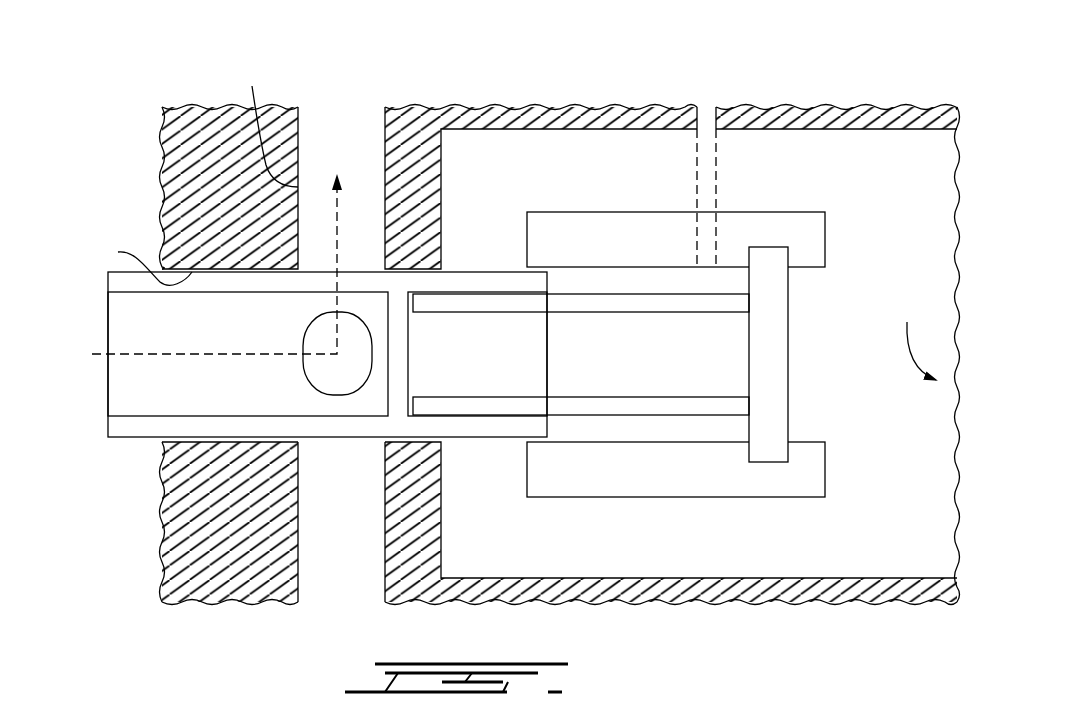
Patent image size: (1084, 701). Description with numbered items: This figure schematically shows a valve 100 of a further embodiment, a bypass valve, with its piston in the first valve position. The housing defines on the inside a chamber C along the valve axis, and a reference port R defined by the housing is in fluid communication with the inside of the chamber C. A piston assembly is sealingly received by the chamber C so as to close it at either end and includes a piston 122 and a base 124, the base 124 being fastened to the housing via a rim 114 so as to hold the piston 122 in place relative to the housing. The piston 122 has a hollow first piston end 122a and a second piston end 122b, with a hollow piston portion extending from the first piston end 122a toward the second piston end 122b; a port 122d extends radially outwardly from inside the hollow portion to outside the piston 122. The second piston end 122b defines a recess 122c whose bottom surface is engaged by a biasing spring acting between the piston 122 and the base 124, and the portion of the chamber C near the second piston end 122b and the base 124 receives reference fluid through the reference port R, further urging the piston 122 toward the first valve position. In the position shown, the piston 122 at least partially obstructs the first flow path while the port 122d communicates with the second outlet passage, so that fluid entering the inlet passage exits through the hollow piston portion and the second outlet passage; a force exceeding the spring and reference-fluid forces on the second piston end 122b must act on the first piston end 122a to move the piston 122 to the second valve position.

The valve 100 is at (501, 357).
The rim 114 is at (772, 212).
The base 124 is at (773, 385).
The piston 122 is at (295, 389).
The first piston end 122a is at (108, 437).
The second piston end 122b is at (550, 437).
The recess 122c is at (408, 355).
The port 122d is at (342, 393).
The reference port R is at (727, 113).
The chamber C is at (724, 368).